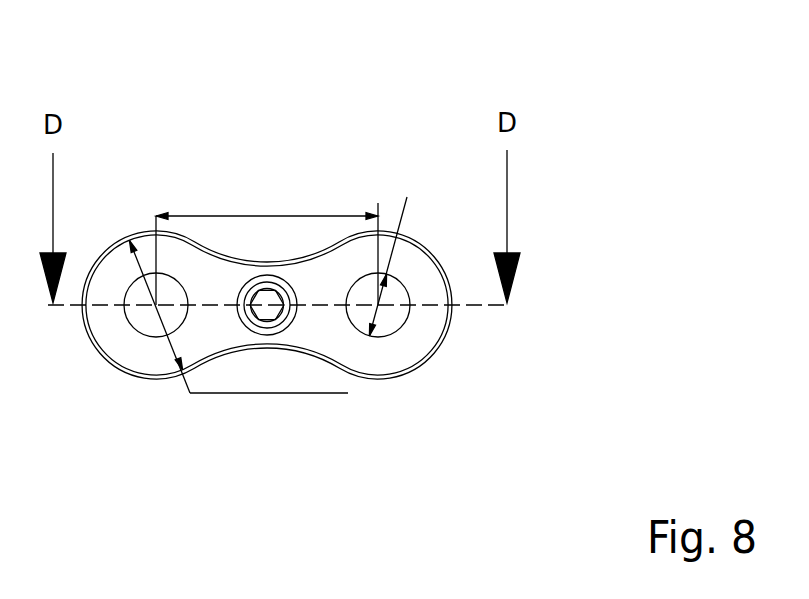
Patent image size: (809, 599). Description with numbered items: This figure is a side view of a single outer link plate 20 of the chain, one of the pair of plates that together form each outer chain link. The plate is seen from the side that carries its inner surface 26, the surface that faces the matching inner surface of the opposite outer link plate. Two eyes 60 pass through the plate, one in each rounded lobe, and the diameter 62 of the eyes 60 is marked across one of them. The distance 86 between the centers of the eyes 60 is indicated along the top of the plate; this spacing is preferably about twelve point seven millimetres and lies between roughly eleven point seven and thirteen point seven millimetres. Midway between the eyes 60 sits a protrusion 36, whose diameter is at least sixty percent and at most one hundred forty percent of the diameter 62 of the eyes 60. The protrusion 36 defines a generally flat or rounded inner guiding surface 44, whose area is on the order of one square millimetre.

The outer link plate 20 is at (195, 174).
The inner surface 26 is at (323, 337).
The protrusion 36 is at (267, 300).
The inner guiding surface 44 is at (266, 312).
The eye 60 is at (147, 327).
The diameter of the eyes 62 is at (407, 197).
The distance between the centers of the eyes 86 is at (237, 215).